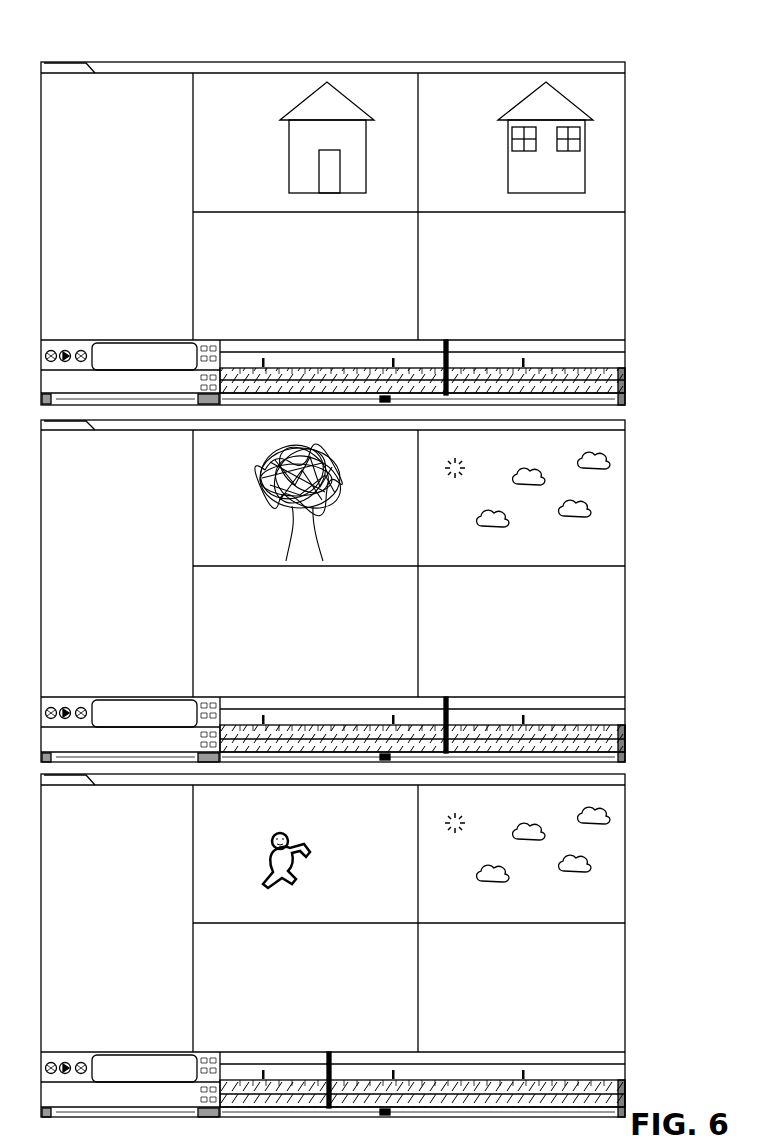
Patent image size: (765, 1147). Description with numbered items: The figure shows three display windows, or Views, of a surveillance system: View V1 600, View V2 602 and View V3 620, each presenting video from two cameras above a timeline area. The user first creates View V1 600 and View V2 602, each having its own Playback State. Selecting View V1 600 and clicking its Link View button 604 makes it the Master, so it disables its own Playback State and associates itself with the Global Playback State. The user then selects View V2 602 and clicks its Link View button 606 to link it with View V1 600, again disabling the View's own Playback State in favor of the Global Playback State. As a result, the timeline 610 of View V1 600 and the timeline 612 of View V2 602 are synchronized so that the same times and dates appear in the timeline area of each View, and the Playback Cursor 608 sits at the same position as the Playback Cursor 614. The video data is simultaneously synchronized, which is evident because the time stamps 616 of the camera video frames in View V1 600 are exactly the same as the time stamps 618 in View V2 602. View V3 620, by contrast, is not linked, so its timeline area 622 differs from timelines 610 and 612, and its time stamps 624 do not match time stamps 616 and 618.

The View V1 600 is at (626, 216).
The View V2 602 is at (626, 540).
The View V3 620 is at (626, 870).
The Link View button 604 is at (216, 341).
The Link View button 606 is at (216, 698).
The Playback Cursor 608 is at (448, 340).
The Playback Cursor 614 is at (447, 697).
The timeline 610 is at (616, 360).
The timeline 612 is at (616, 718).
The timeline area 622 is at (616, 1075).
The time stamps 616 is at (418, 82).
The time stamps 618 is at (305, 437).
The time stamps 624 is at (305, 792).